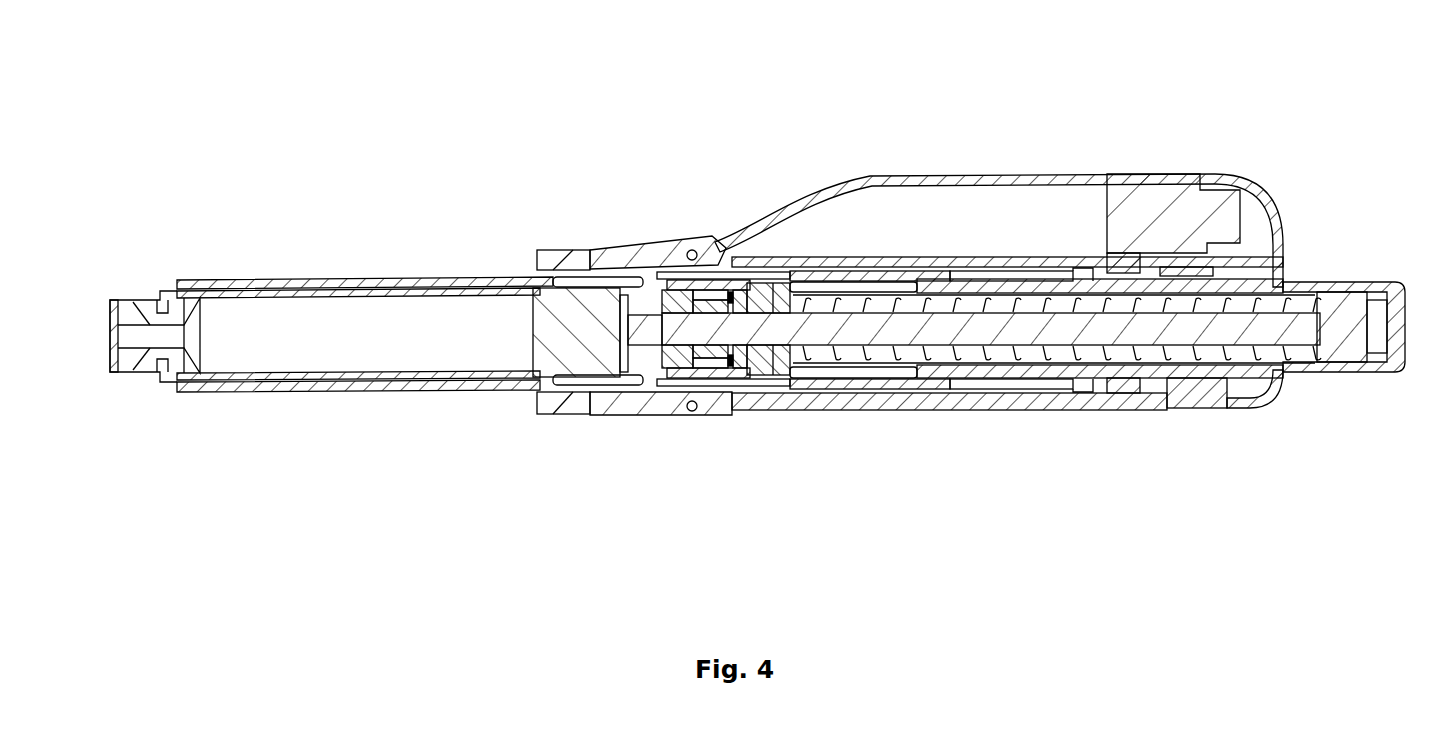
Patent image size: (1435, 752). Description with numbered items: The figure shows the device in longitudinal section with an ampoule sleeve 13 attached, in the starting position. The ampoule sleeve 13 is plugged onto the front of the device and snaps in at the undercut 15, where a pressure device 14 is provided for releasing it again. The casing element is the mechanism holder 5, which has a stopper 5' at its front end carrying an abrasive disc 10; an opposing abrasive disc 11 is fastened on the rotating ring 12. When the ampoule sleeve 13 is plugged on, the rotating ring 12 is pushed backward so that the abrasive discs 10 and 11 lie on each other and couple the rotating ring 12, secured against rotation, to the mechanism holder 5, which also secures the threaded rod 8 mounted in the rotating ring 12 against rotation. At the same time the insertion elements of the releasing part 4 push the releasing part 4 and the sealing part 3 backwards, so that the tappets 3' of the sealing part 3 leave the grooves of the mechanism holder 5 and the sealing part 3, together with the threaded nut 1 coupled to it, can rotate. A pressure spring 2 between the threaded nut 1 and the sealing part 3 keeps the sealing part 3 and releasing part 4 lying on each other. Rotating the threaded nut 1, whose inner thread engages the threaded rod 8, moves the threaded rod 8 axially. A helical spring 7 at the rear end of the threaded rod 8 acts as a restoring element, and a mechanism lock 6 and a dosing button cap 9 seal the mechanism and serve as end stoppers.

The threaded nut 1 is at (980, 287).
The pressure spring 2 is at (849, 302).
The sealing part 3 is at (787, 189).
The tappets 3' is at (768, 434).
The releasing part 4 is at (758, 292).
The mechanism holder 5 is at (1097, 222).
The stopper 5' is at (699, 434).
The mechanism lock 6 is at (1136, 268).
The helical spring 7 is at (1258, 305).
The threaded rod 8 is at (1343, 307).
The dosing button cap 9 is at (1394, 280).
The abrasive disc 10 is at (726, 262).
The abrasive disc 11 is at (716, 268).
The rotating ring 12 is at (663, 273).
The ampoule sleeve 13 is at (395, 278).
The pressure device 14 is at (600, 257).
The undercut 15 is at (588, 393).